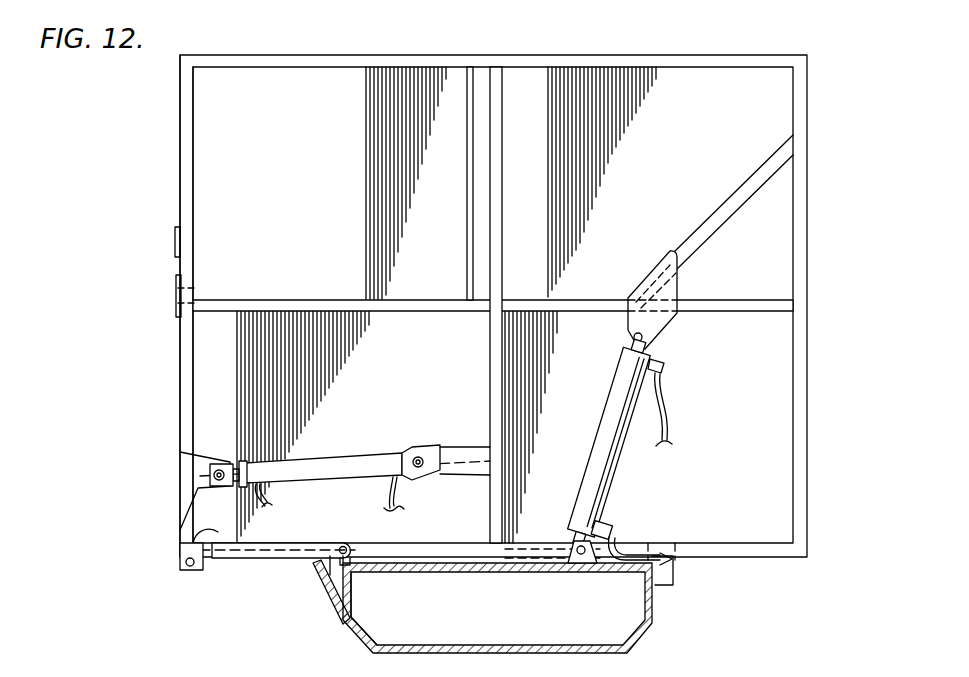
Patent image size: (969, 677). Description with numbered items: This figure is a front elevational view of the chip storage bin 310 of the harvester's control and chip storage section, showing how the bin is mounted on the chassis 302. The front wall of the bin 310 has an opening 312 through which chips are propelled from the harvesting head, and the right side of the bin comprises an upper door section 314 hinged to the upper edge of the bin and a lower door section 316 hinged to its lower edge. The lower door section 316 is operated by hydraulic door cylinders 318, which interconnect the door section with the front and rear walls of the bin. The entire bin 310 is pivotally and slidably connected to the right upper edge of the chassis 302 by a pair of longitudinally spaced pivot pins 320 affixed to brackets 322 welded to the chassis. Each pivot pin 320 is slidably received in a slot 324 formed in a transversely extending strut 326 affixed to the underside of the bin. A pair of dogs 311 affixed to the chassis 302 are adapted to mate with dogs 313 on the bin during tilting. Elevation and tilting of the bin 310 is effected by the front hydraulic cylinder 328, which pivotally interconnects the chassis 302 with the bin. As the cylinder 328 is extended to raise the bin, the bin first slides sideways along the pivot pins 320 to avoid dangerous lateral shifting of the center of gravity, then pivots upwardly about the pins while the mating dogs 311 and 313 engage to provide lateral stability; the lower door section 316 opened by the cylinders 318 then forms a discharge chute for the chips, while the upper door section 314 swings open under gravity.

The chassis 302 is at (651, 625).
The chip storage bin 310 is at (808, 109).
The dogs 311 is at (321, 574).
The opening 312 is at (376, 92).
The dogs 313 is at (203, 572).
The upper door section 314 is at (184, 162).
The lower door section 316 is at (186, 371).
The hydraulic door cylinders 318 is at (325, 462).
The pivot pins 320 is at (356, 546).
The brackets 322 is at (347, 584).
The slot 324 is at (286, 546).
The strut 326 is at (277, 564).
The front hydraulic cylinder 328 is at (613, 493).